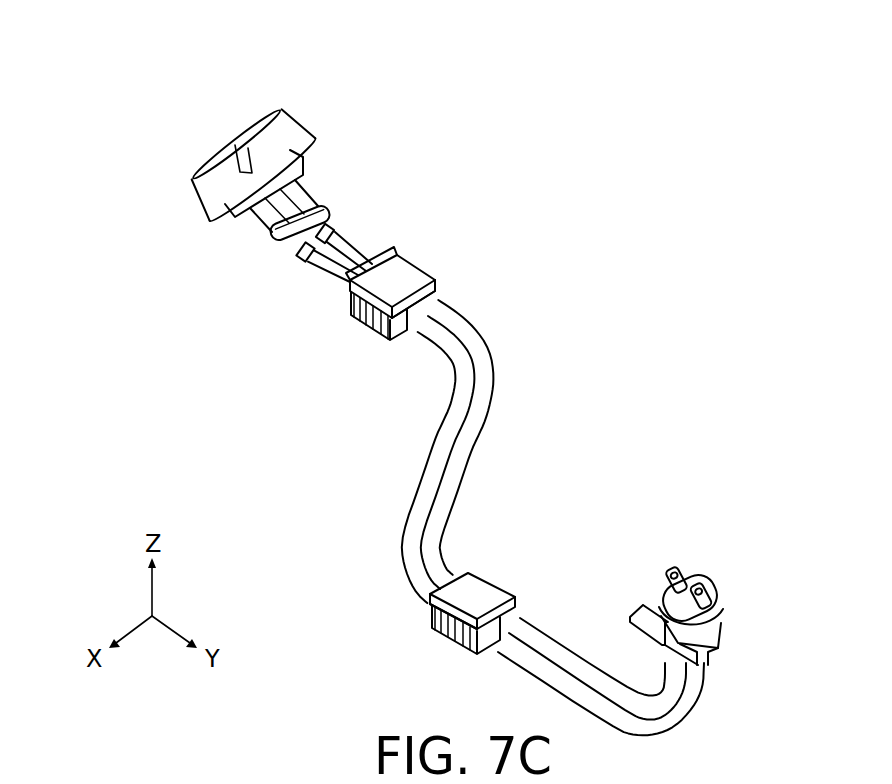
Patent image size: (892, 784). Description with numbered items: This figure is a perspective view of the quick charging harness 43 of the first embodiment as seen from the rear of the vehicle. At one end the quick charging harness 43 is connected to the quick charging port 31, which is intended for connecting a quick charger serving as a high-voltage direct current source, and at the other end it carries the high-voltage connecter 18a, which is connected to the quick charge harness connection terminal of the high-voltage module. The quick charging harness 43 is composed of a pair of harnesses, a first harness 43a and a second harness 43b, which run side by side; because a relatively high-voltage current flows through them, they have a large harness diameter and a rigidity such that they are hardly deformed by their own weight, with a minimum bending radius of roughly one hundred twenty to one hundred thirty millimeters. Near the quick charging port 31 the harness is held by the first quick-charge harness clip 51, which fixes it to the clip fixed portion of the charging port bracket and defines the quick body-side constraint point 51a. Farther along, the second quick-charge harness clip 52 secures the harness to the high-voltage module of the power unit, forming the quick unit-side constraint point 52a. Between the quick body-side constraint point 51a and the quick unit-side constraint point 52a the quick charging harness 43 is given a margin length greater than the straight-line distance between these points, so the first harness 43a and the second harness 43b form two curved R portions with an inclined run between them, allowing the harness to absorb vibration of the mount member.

The quick charging port 31 is at (237, 128).
The first quick-charge harness clip 51 is at (416, 262).
The quick body-side constraint point 51a is at (440, 291).
The quick charging harness 43 is at (507, 451).
The first harness 43a is at (480, 399).
The second harness 43b is at (438, 467).
The second quick-charge harness clip 52 is at (484, 588).
The quick unit-side constraint point 52a is at (428, 600).
The high-voltage connecter 18a is at (714, 598).